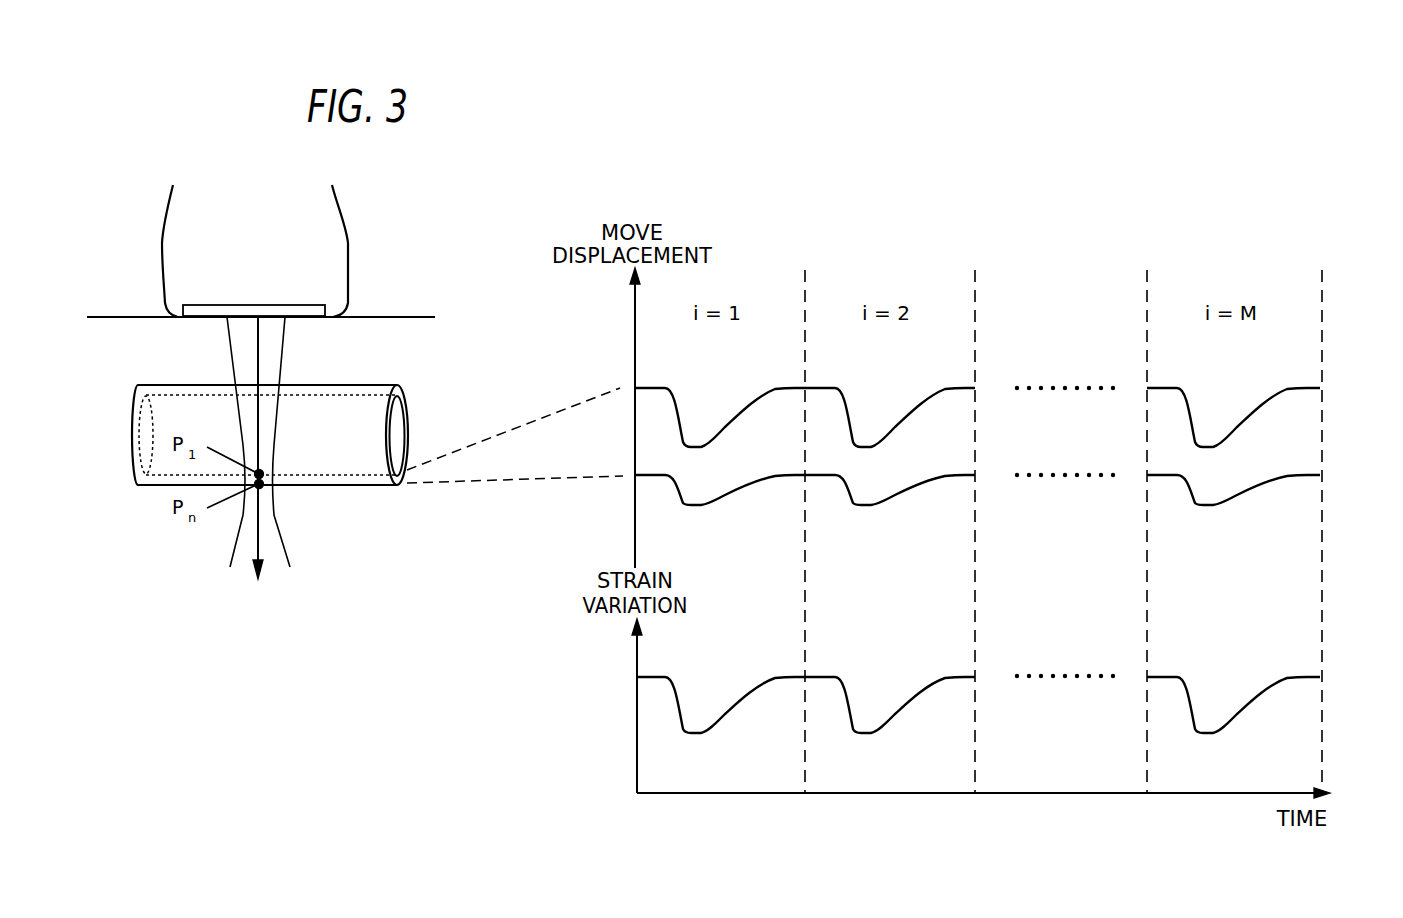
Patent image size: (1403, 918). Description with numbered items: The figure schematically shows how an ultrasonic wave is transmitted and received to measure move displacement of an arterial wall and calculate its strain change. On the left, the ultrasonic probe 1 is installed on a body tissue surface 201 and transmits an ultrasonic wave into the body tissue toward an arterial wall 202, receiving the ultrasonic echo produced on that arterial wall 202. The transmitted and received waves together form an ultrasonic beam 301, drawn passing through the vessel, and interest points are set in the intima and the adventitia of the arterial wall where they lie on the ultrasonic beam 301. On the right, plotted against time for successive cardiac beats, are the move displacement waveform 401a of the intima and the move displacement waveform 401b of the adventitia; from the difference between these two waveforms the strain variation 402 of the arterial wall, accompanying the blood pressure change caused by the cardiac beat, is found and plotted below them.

The ultrasonic probe 1 is at (343, 213).
The body tissue surface 201 is at (408, 317).
The arterial wall 202 is at (350, 385).
The ultrasonic beam 301 is at (262, 535).
The move displacement waveform of the intima 401a is at (1318, 388).
The move displacement waveform of the adventitia 401b is at (1318, 475).
The strain variation 402 is at (1320, 676).